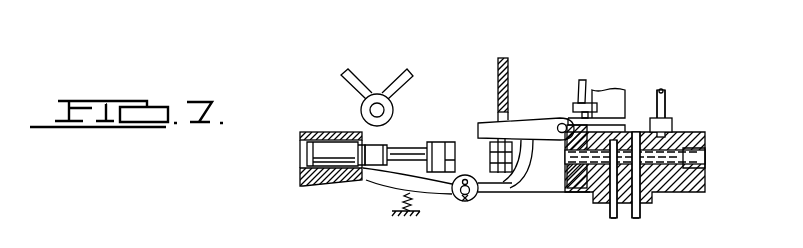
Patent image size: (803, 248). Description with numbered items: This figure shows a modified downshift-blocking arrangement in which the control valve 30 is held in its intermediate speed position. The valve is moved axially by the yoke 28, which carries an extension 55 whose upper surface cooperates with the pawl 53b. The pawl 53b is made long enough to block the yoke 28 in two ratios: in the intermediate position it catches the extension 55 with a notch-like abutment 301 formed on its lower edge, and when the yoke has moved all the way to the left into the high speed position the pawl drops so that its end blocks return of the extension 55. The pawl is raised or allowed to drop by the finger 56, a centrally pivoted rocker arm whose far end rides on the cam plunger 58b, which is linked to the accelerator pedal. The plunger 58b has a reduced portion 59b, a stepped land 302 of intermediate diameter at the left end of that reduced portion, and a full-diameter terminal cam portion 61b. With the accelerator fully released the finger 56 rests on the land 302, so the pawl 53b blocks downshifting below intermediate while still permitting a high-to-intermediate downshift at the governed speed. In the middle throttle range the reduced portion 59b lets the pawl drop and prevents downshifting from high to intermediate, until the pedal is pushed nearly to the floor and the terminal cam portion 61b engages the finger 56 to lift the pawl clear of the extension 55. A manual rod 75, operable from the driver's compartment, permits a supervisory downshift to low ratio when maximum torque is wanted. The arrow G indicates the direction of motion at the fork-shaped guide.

The fork-shaped guide member G is at (379, 89).
The cam plunger 58b is at (323, 145).
The reduced portion 59b is at (405, 150).
The terminal cam portion 61b is at (441, 142).
The yoke 28 is at (498, 72).
The notch-like abutment 301 is at (512, 137).
The pawl 53b is at (547, 117).
The rod 75 is at (583, 80).
The control valve 30 is at (705, 160).
The extension 55 is at (512, 160).
The stepped land 302 is at (367, 170).
The finger 56 is at (387, 183).